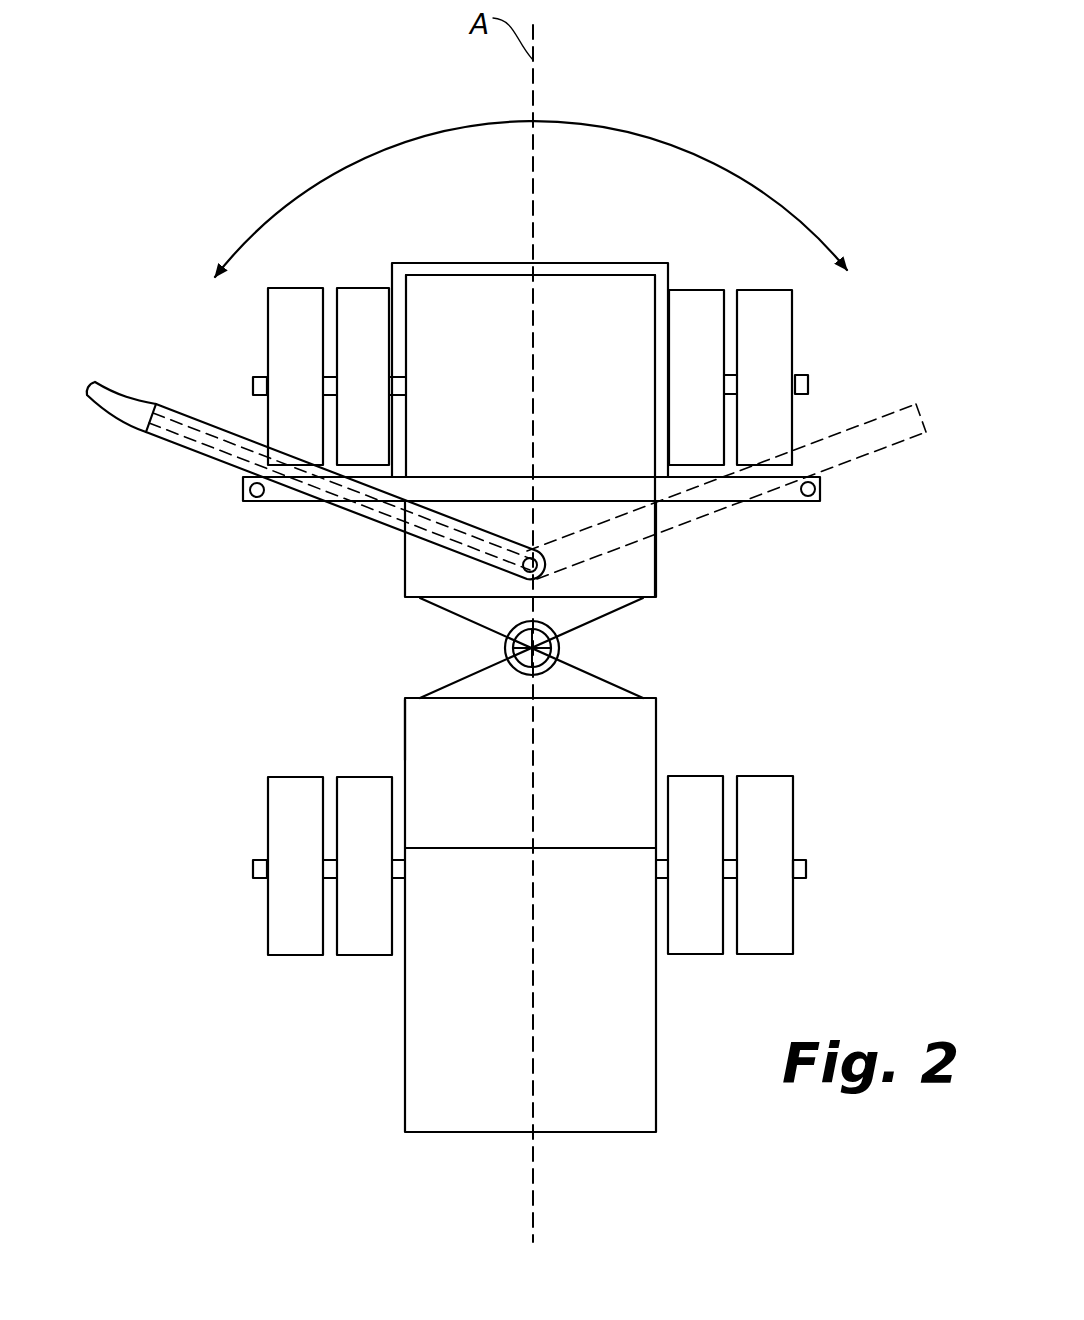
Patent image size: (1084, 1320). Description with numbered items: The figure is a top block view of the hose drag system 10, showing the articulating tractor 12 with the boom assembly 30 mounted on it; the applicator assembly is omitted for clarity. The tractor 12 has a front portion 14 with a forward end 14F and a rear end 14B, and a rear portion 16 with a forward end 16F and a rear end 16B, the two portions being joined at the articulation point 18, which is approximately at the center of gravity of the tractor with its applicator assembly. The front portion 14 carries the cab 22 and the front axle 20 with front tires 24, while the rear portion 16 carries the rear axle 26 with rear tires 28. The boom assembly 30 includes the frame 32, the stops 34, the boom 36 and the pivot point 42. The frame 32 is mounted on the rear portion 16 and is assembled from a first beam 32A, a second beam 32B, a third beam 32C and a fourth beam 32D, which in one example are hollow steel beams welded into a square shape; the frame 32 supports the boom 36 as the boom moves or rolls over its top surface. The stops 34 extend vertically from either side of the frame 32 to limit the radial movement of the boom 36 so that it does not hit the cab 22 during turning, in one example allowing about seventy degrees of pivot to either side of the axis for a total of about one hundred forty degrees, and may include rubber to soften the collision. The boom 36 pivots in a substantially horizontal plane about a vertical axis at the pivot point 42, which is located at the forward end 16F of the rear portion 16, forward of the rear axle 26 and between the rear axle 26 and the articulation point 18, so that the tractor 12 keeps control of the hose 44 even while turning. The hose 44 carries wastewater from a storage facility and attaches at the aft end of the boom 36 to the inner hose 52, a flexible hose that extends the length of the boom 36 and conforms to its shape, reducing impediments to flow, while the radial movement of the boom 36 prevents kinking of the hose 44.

The hose drag system 10 is at (768, 632).
The articulating tractor 12 is at (668, 745).
The front portion 14 is at (400, 1078).
The rear end 14B is at (597, 695).
The forward end 14F is at (580, 1135).
The rear portion 16 is at (397, 593).
The rear end 16B is at (600, 263).
The forward end 16F is at (650, 602).
The articulation point 18 is at (507, 642).
The front axle 20 is at (255, 867).
The cab 22 is at (420, 727).
The front tires 24 is at (530, 865).
The rear axle 26 is at (260, 382).
The rear tires 28 is at (530, 376).
The boom assembly 30 is at (170, 500).
The frame 32 is at (430, 478).
The first beam 32A is at (628, 478).
The second beam 32B is at (507, 263).
The third beam 32C is at (406, 357).
The fourth beam 32D is at (653, 348).
The stops 34 is at (255, 500).
The boom 36 is at (148, 430).
The pivot point 42 is at (525, 575).
The hose 44 is at (102, 393).
The inner hose 52 is at (332, 532).